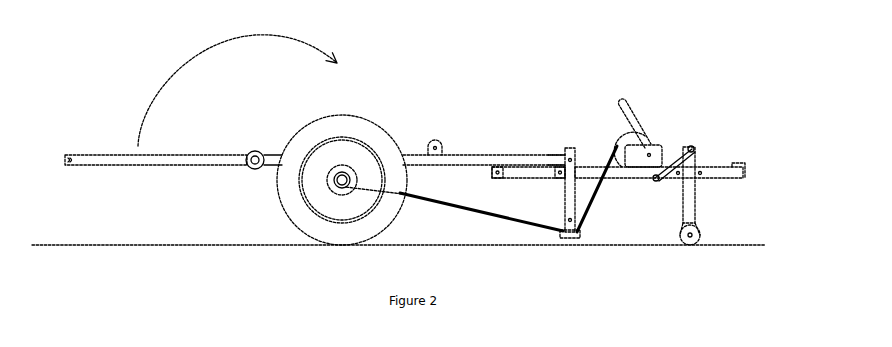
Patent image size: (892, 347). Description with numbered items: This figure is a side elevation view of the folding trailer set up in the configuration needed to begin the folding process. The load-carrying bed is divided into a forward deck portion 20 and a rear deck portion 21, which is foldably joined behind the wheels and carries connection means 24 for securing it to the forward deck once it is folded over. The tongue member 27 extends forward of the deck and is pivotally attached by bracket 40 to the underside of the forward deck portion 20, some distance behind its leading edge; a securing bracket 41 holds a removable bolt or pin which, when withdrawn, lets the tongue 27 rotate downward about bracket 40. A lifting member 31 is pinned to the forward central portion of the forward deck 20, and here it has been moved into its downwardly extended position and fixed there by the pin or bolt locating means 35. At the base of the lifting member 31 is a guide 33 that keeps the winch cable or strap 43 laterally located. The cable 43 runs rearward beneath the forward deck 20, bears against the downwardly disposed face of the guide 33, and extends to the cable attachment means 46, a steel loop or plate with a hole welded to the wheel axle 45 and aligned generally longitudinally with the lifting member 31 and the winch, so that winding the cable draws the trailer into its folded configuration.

The forward deck portion 20 is at (485, 155).
The rear deck portion 21 is at (104, 155).
The connection means 24 is at (74, 168).
The tongue member 27 is at (600, 168).
The lifting member 31 is at (567, 148).
The guide 33 is at (577, 238).
The locating means 35 is at (565, 154).
The bracket 40 is at (494, 177).
The securing bracket 41 is at (551, 178).
The winch cable or strap 43 is at (506, 222).
The wheel axle 45 is at (327, 187).
The cable attachment means 46 is at (348, 188).